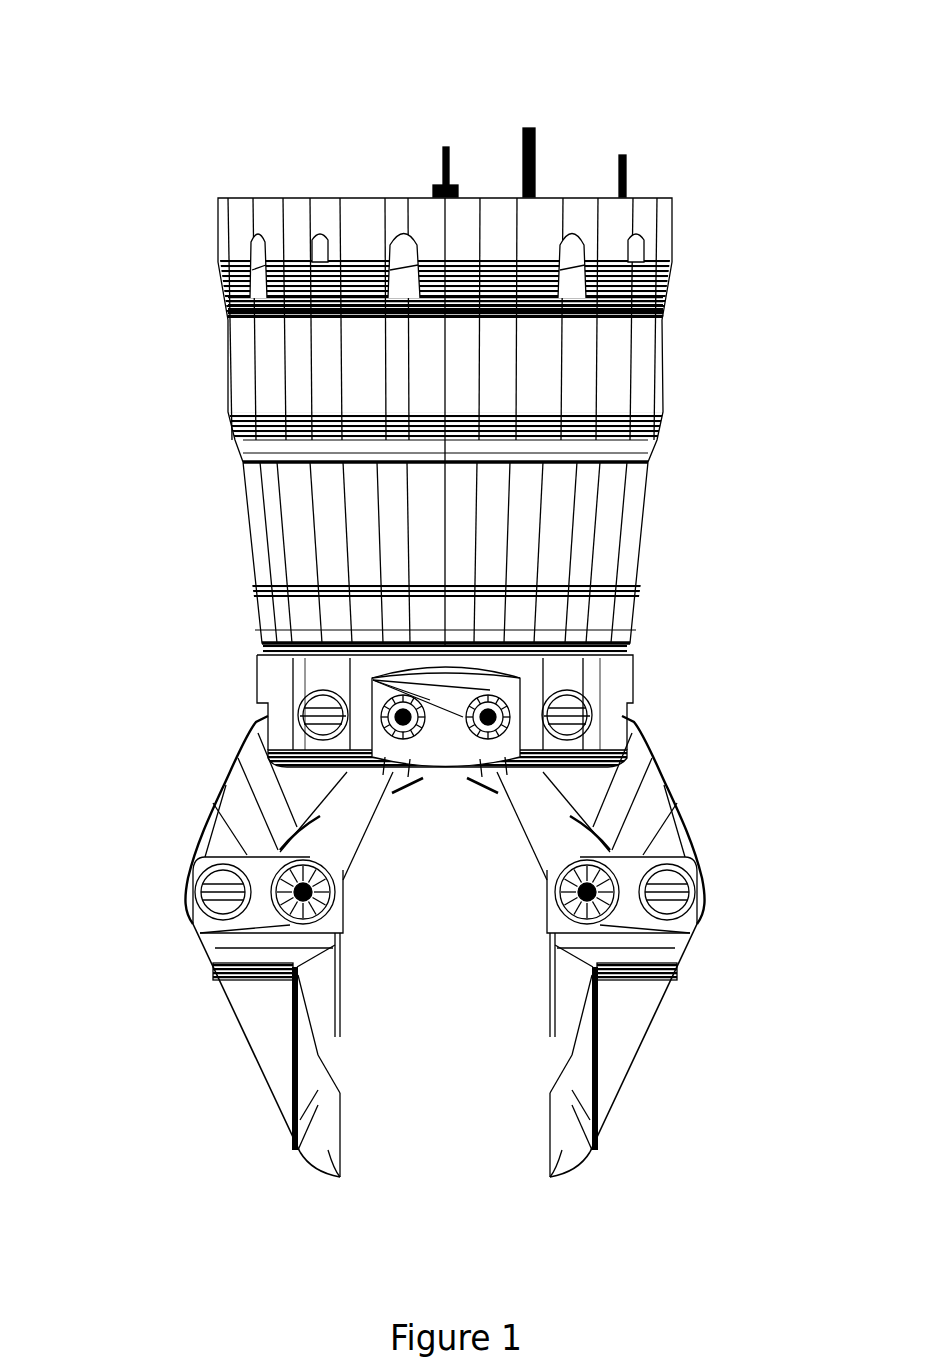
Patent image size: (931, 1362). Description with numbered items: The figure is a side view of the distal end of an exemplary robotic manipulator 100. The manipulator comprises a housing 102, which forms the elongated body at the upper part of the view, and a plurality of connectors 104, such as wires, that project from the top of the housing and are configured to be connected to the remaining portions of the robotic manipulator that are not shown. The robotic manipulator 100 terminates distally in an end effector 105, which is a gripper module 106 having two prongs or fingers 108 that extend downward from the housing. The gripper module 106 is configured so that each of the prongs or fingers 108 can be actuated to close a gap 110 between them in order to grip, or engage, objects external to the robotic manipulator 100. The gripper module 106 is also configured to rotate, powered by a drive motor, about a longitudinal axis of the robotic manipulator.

The robotic manipulator 100 is at (710, 143).
The housing 102 is at (430, 510).
The connectors 104 is at (607, 145).
The end effector 105 is at (708, 747).
The gripper module 106 is at (190, 651).
The prongs or fingers 108 is at (565, 1148).
The gap 110 is at (485, 1045).